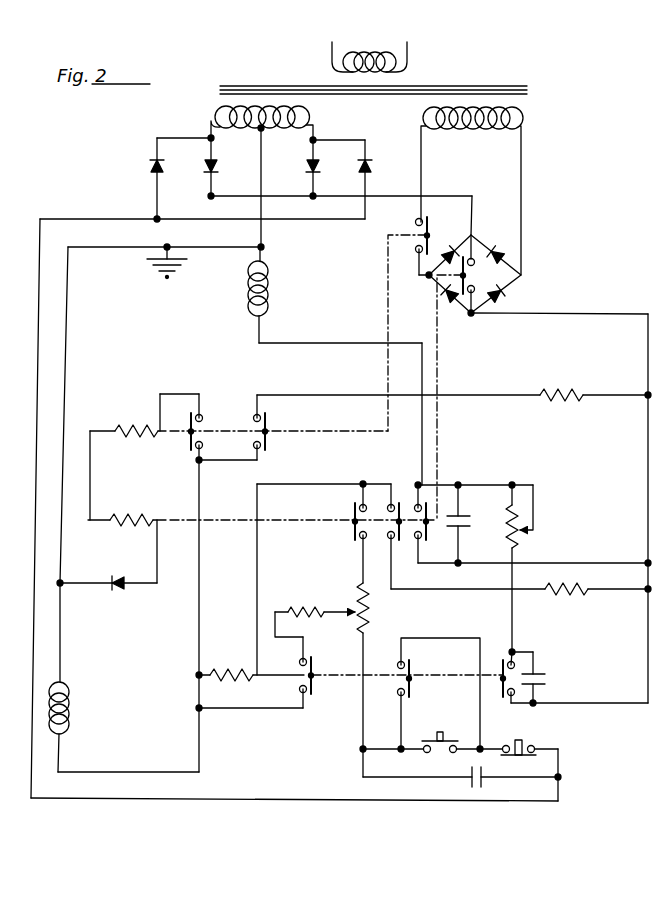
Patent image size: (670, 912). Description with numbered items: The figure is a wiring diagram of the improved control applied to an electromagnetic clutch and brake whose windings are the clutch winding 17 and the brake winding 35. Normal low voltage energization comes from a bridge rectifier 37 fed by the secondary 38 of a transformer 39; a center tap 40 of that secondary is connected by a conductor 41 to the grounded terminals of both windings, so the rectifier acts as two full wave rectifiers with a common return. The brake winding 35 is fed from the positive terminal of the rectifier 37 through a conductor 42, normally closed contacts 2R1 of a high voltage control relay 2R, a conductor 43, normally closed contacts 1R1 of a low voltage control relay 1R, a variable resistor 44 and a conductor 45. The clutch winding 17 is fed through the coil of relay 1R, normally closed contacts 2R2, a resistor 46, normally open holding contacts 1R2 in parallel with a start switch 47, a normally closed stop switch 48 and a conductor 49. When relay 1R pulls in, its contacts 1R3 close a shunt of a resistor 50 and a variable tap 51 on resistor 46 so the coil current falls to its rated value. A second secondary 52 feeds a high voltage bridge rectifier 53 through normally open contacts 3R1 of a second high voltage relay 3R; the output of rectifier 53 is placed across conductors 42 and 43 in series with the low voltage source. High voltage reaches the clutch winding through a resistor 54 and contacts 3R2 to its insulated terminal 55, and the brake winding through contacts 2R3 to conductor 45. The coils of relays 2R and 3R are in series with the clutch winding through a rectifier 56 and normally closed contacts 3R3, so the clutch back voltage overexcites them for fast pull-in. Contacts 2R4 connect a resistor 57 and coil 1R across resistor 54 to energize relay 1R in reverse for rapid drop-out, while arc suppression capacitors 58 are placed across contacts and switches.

The clutch winding 17 is at (70, 684).
The brake winding 35 is at (247, 300).
The rectifier 37 is at (148, 158).
The secondary 38 is at (312, 122).
The transformer 39 is at (316, 75).
The center tap 40 is at (261, 129).
The conductor 41 is at (263, 212).
The conductor 42 is at (443, 197).
The conductor 43 is at (611, 314).
The variable resistor 44 is at (517, 546).
The conductor 45 is at (348, 344).
The resistor 46 is at (368, 603).
The start switch 47 is at (437, 751).
The stop switch 48 is at (537, 745).
The conductor 49 is at (395, 803).
The resistor 50 is at (315, 621).
The variable tap 51 is at (356, 606).
The secondary 52 is at (523, 133).
The full wave rectifier 53 is at (506, 252).
The resistor 54 is at (566, 398).
The insulated terminal 55 is at (197, 604).
The rectifier 56 is at (119, 598).
The resistor 57 is at (572, 594).
The arc suppression capacitors 58 is at (462, 518).
The low voltage control relay 1R is at (232, 659).
The high voltage control relay 2R is at (126, 514).
The second high voltage relay 3R is at (128, 426).
The normally closed contacts 1R1 is at (503, 663).
The normally open holding contacts 1R2 is at (406, 684).
The normally open contacts 1R3 is at (312, 698).
The normally closed contacts 2R1 is at (481, 277).
The normally closed contacts 2R2 is at (359, 528).
The normally open contacts 2R3 is at (412, 504).
The normally open contacts 2R4 is at (388, 506).
The normally open contacts 3R1 is at (412, 233).
The normally open contacts 3R2 is at (273, 426).
The normally closed contacts 3R3 is at (190, 447).